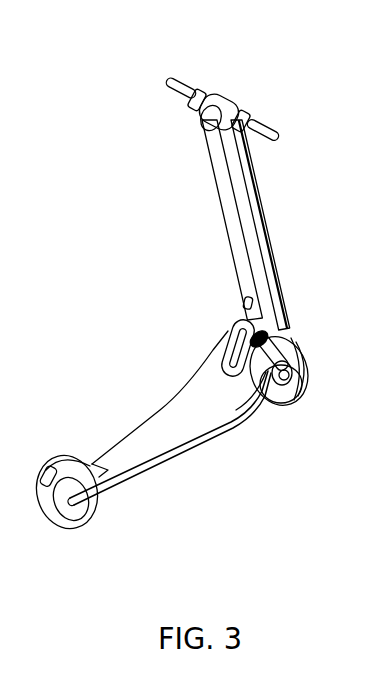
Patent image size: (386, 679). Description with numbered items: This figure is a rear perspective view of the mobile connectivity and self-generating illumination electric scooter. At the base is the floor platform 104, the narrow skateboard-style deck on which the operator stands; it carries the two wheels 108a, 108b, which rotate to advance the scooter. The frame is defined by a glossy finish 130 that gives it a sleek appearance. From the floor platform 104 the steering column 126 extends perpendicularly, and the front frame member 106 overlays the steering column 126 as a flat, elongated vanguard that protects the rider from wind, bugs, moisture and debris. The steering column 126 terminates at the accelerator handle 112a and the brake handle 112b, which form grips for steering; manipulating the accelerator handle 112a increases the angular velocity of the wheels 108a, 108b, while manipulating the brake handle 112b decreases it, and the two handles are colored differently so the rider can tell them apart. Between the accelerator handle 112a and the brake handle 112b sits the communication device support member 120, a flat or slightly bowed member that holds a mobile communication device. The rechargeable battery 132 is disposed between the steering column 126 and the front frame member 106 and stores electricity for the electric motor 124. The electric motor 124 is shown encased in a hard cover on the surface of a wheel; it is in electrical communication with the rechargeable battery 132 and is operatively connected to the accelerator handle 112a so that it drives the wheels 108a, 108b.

The floor platform 104 is at (127, 431).
The front frame member 106 is at (265, 220).
The wheel 108a is at (263, 404).
The wheel 108b is at (38, 508).
The accelerator handle 112a is at (171, 78).
The brake handle 112b is at (278, 137).
The communication device support member 120 is at (220, 104).
The electric motor 124 is at (288, 386).
The steering column 126 is at (225, 207).
The glossy finish 130 is at (175, 450).
The rechargeable battery 132 is at (244, 299).